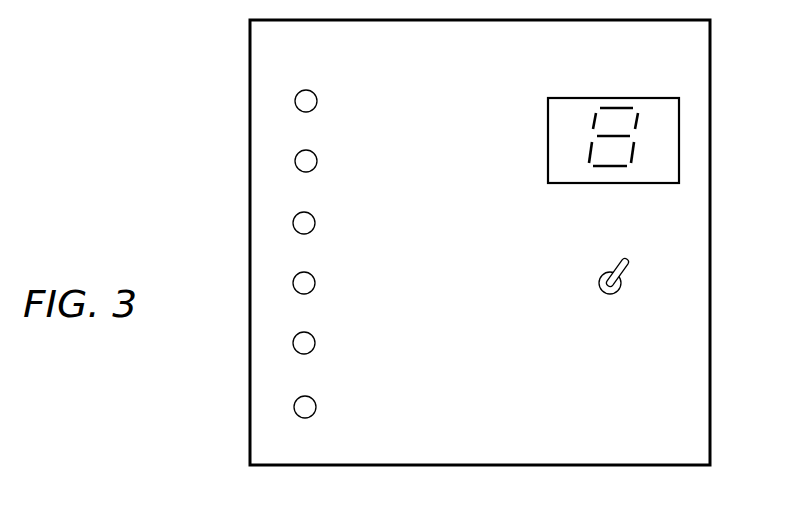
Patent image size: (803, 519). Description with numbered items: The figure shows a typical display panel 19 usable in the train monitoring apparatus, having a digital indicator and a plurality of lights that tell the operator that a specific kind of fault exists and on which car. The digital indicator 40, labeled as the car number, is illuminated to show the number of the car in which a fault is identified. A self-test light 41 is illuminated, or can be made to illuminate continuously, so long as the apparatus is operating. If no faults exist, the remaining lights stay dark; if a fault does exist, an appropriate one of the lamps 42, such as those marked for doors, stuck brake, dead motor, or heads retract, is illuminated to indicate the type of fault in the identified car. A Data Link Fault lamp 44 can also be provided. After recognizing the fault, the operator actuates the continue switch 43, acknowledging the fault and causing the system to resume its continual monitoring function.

The display panel 19 is at (621, 466).
The digital indicator 40 is at (679, 145).
The self-test light 41 is at (294, 409).
The lamps 42 is at (295, 104).
The continue switch 43 is at (623, 281).
The Data Link Fault lamp 44 is at (293, 343).